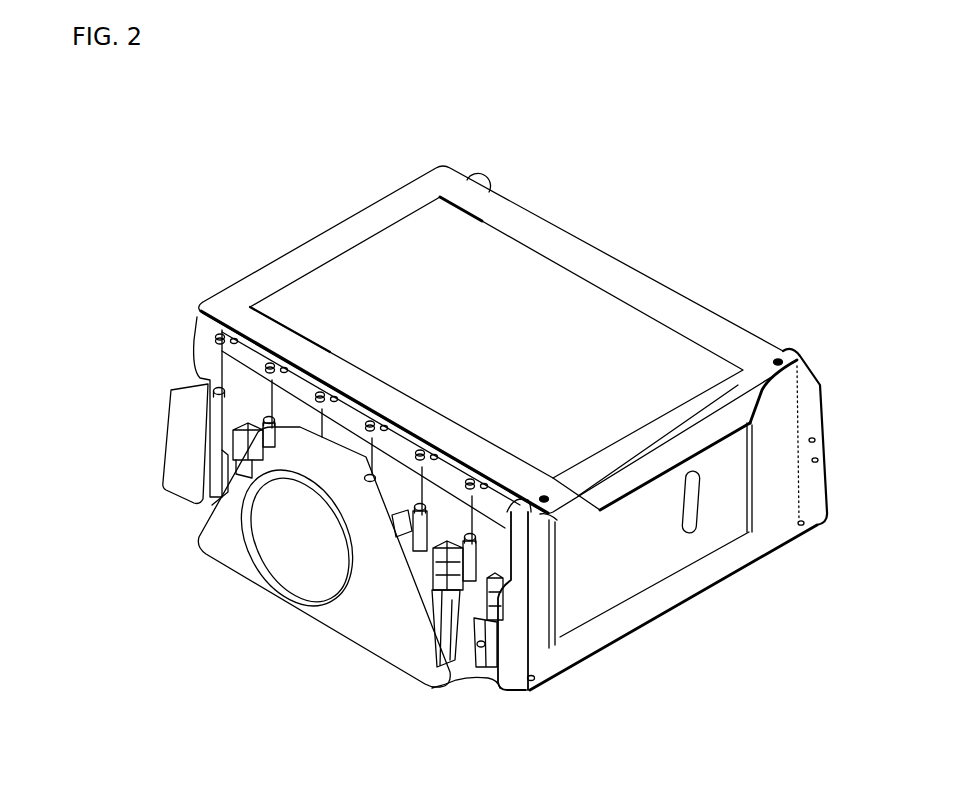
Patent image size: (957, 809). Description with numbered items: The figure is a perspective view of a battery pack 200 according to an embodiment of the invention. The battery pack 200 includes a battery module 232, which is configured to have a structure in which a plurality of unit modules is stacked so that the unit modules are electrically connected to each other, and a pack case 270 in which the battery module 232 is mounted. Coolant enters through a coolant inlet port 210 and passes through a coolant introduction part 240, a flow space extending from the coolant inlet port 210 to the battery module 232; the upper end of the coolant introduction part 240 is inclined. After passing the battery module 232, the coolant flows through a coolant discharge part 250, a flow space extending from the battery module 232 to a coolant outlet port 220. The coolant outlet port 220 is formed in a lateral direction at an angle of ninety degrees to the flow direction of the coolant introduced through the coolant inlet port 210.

The battery pack 200 is at (90, 133).
The coolant inlet port 210 is at (406, 182).
The coolant outlet port 220 is at (333, 577).
The battery module 232 is at (222, 355).
The coolant introduction part 240 is at (485, 246).
The coolant discharge part 250 is at (470, 675).
The pack case 270 is at (824, 376).